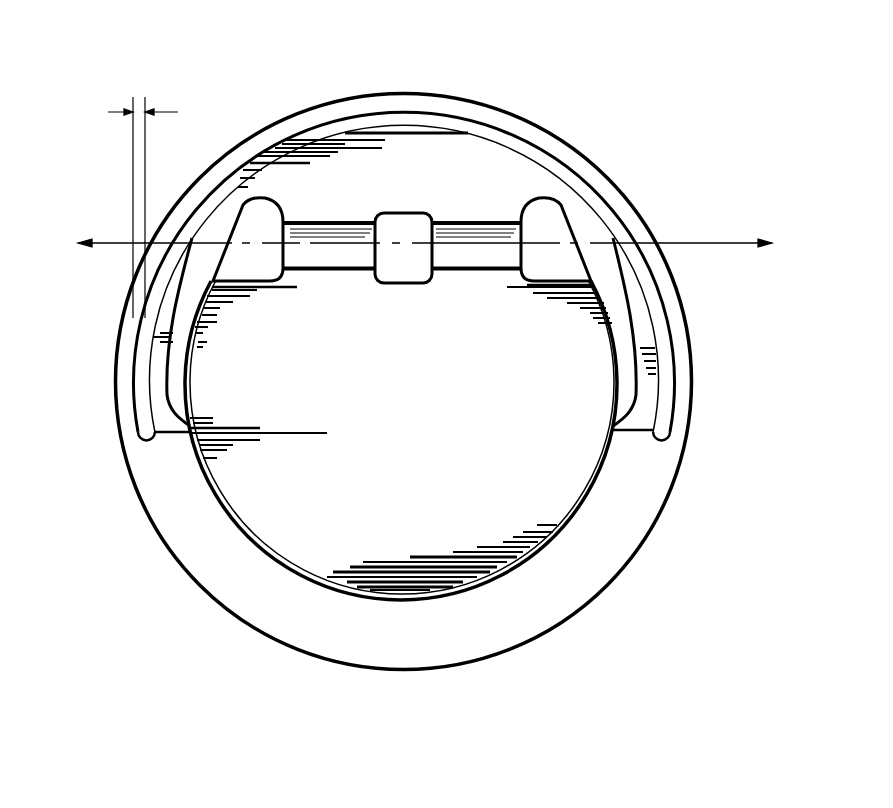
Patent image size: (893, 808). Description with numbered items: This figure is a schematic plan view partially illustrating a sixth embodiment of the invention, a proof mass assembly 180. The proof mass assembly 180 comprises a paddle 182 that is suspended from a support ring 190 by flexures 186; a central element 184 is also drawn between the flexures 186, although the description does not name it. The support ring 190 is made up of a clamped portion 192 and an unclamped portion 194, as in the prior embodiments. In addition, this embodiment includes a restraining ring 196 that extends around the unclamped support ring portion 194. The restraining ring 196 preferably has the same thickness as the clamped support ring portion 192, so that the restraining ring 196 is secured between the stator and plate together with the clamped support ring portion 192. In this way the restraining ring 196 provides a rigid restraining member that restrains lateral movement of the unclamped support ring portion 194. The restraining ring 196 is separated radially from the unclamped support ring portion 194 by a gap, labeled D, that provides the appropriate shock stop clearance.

The proof mass assembly 180 is at (603, 145).
The paddle 182 is at (418, 478).
The central hub 184 is at (424, 168).
The flexures 186 is at (328, 236).
The support ring 190 is at (168, 563).
The clamped portion 192 is at (555, 598).
The unclamped portion 194 is at (598, 233).
The restraining ring 196 is at (640, 229).